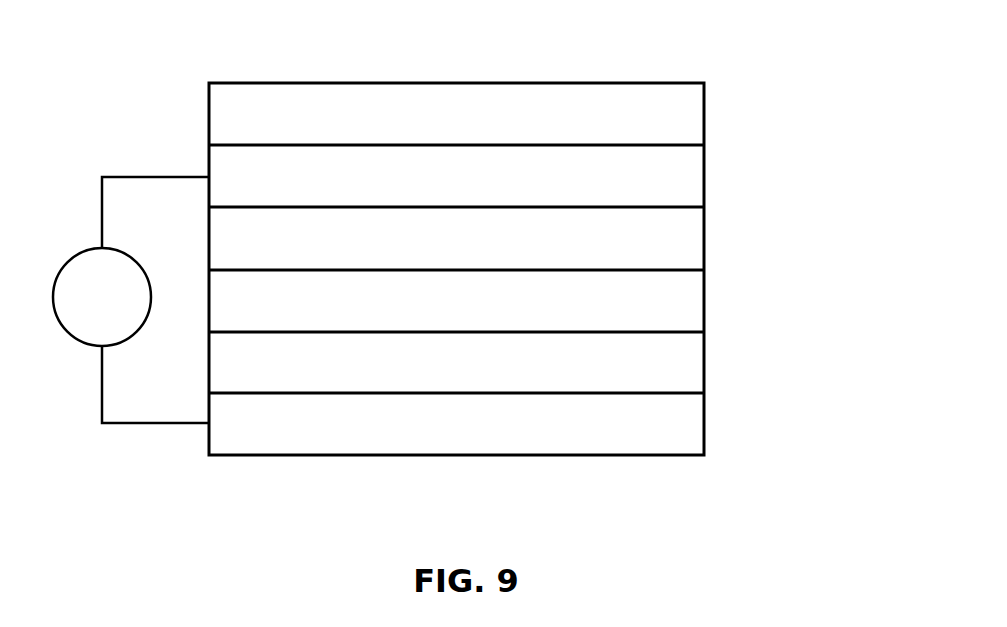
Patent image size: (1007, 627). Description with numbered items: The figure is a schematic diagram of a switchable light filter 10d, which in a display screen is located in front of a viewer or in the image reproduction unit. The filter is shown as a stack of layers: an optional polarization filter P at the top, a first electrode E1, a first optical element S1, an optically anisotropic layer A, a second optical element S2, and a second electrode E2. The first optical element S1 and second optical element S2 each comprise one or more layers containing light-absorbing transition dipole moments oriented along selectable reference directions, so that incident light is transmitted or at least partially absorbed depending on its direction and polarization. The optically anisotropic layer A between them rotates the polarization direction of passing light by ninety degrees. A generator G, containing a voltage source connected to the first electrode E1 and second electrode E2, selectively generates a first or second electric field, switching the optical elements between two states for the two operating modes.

The switchable light filter 10d is at (456, 229).
The generator G is at (137, 175).
The polarization filter P is at (471, 115).
The first electrode E1 is at (471, 176).
The first optical element S1 is at (471, 239).
The optically anisotropic layer A is at (470, 302).
The second optical element S2 is at (471, 363).
The second electrode E2 is at (471, 425).